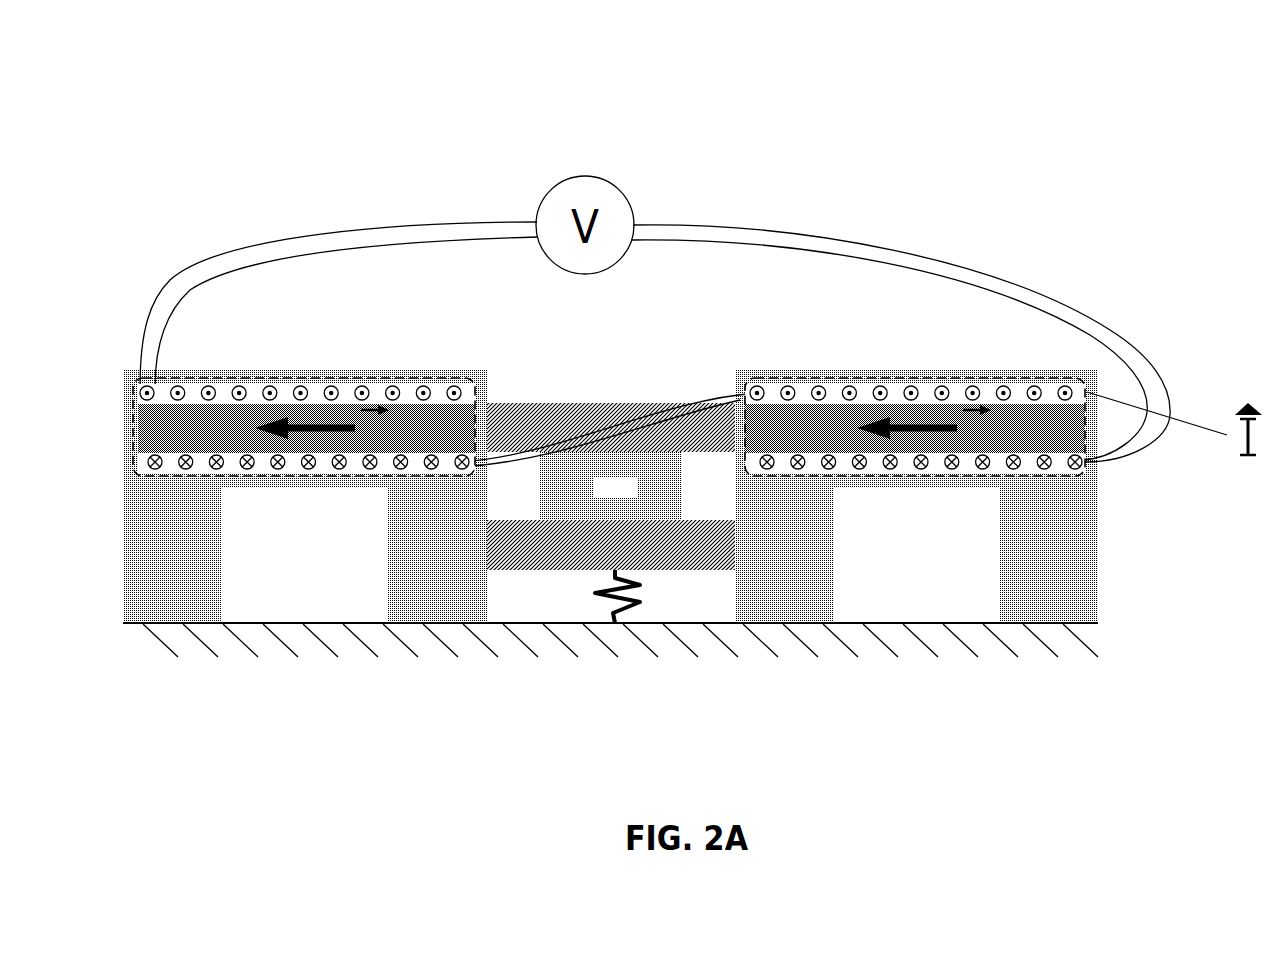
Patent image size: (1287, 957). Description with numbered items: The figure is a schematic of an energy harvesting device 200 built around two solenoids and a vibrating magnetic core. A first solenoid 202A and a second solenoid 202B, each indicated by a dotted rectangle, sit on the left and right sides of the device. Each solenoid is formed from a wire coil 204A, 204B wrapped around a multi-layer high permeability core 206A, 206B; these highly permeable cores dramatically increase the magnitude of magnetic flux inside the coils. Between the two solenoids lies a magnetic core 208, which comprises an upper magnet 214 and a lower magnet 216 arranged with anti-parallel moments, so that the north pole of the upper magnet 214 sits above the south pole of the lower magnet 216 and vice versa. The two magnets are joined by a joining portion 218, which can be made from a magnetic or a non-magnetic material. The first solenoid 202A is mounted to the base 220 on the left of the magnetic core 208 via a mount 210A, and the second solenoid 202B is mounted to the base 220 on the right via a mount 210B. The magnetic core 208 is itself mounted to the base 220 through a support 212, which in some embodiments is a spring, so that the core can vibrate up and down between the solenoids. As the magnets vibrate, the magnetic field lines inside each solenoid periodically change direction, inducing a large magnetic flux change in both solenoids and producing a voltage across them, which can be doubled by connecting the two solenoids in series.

The energy harvesting device 200 is at (1200, 120).
The first solenoid 202A is at (305, 402).
The second solenoid 202B is at (916, 402).
The wire coil 204A is at (218, 456).
The wire coil 204B is at (1013, 456).
The multi-layer high permeability core 206A is at (200, 444).
The multi-layer high permeability core 206B is at (1081, 444).
The magnetic core 208 is at (552, 550).
The mount 210A is at (200, 549).
The mount 210B is at (1081, 549).
The support 212 is at (584, 596).
The magnet 214 is at (568, 410).
The magnet 216 is at (537, 562).
The joining portion 218 is at (636, 499).
The base 220 is at (600, 640).